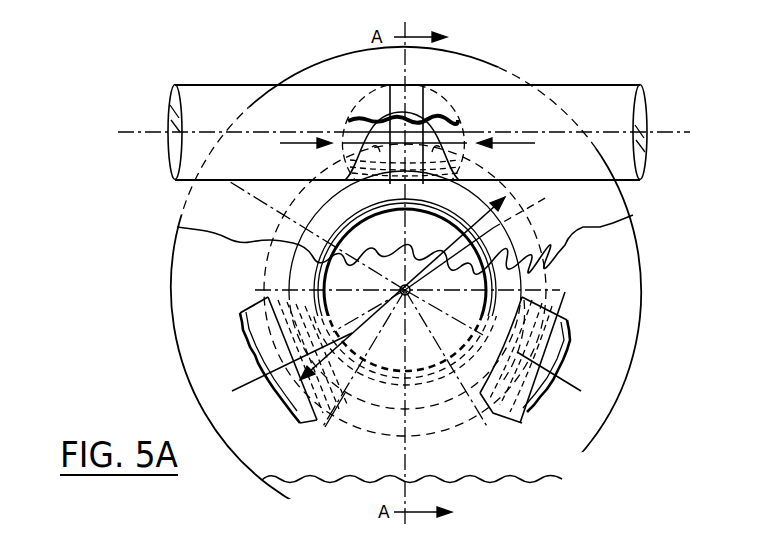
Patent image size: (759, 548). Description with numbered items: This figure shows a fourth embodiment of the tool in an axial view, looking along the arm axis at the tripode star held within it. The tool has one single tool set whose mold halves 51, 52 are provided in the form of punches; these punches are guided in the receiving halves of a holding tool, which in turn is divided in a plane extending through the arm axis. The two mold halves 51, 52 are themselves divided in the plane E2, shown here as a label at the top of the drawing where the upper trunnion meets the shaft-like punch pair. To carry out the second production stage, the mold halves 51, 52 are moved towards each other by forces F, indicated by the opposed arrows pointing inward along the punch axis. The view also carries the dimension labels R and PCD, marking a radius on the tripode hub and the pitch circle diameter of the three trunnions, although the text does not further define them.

The mold half 51 is at (252, 90).
The mold half 52 is at (592, 90).
The plane E2 is at (409, 100).
The radius of tripod hub R is at (540, 240).
The pitch circle diameter PCD is at (505, 197).
The forces F is at (407, 152).